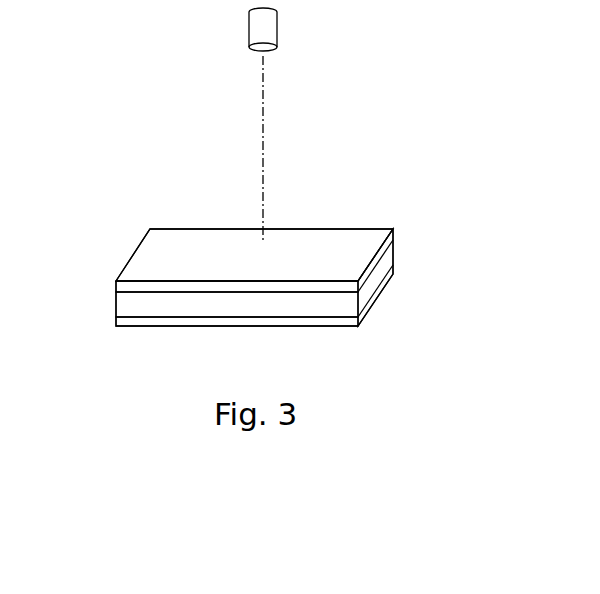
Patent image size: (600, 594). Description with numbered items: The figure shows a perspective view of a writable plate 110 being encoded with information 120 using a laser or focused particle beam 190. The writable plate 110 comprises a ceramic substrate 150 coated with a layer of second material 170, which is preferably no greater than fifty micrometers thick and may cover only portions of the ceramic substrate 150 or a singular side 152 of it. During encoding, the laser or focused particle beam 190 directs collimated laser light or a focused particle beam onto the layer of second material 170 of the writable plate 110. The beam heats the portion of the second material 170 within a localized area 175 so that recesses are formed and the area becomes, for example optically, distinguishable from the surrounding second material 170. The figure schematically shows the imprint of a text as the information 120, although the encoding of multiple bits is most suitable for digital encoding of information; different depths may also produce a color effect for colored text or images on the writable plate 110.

The writable plate 110 is at (122, 227).
The information 120 is at (330, 232).
The ceramic substrate 150 is at (126, 303).
The singular side 152 is at (396, 243).
The layer of second material 170 is at (118, 284).
The localized area 175 is at (280, 232).
The laser or focused particle beam 190 is at (247, 28).